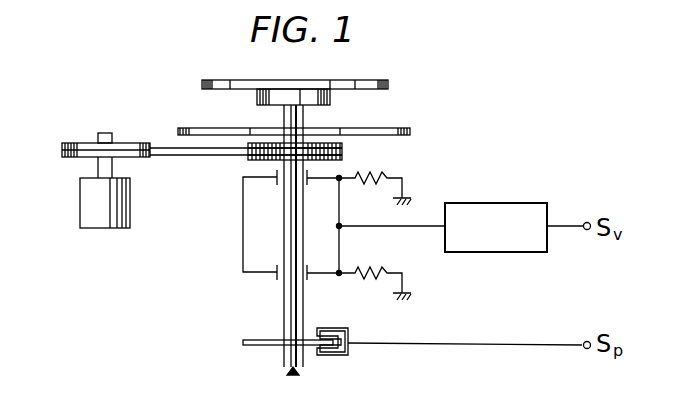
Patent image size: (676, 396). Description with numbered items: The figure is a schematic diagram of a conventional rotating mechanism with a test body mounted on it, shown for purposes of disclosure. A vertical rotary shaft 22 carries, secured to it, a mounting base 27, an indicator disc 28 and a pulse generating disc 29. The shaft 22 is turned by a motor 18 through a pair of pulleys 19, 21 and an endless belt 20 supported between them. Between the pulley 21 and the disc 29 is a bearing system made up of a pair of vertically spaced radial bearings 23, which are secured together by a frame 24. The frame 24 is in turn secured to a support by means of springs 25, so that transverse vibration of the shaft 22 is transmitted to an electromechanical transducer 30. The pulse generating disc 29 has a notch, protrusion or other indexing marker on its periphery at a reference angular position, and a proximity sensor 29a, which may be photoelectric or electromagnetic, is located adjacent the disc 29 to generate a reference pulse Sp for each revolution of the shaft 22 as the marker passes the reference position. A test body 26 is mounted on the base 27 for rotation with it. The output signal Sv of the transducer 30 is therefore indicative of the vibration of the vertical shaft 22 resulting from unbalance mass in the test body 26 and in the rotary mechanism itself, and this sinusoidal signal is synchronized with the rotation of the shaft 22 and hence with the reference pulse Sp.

The motor 18 is at (106, 218).
The pulley 19 is at (66, 143).
The endless belt 20 is at (200, 156).
The pulley 21 is at (344, 162).
The vertical rotary shaft 22 is at (299, 307).
The radial bearings 23 is at (277, 186).
The frame 24 is at (243, 229).
The springs 25 is at (376, 172).
The test body 26 is at (382, 82).
The mounting base 27 is at (334, 105).
The indicator disc 28 is at (392, 128).
The pulse generating disc 29 is at (262, 339).
The proximity sensor 29a is at (346, 352).
The electromechanical transducer 30 is at (463, 253).